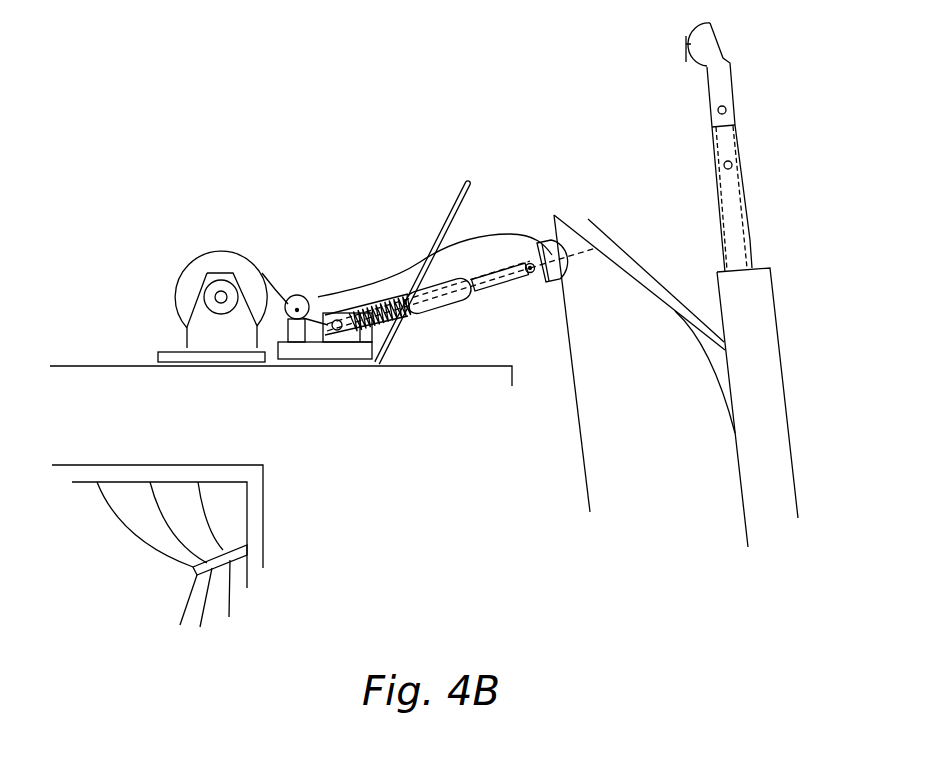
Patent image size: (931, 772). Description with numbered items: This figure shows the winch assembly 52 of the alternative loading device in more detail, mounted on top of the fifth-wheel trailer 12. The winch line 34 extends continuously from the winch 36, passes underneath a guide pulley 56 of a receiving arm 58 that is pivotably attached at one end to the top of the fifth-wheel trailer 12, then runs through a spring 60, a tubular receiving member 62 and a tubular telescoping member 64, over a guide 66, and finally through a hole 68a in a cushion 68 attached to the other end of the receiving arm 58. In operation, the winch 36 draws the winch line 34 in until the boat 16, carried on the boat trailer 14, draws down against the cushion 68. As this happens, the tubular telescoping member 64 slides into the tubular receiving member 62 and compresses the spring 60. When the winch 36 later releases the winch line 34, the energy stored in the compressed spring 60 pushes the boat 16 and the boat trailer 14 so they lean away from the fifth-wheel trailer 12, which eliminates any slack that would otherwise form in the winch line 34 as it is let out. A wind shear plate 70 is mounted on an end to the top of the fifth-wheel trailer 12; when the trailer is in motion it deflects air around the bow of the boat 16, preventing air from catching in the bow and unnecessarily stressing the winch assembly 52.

The fifth-wheel trailer 12 is at (80, 393).
The boat trailer 14 is at (810, 384).
The boat 16 is at (668, 440).
The winch line 34 is at (280, 268).
The winch 36 is at (178, 242).
The winch assembly 52 is at (322, 195).
The guide pulley 56 is at (308, 302).
The receiving arm 58 is at (422, 260).
The spring 60 is at (384, 322).
The tubular receiving member 62 is at (443, 308).
The tubular telescoping member 64 is at (493, 286).
The guide 66 is at (530, 274).
The cushion 68 is at (558, 283).
The hole 68a is at (552, 255).
The wind shear plate 70 is at (474, 180).